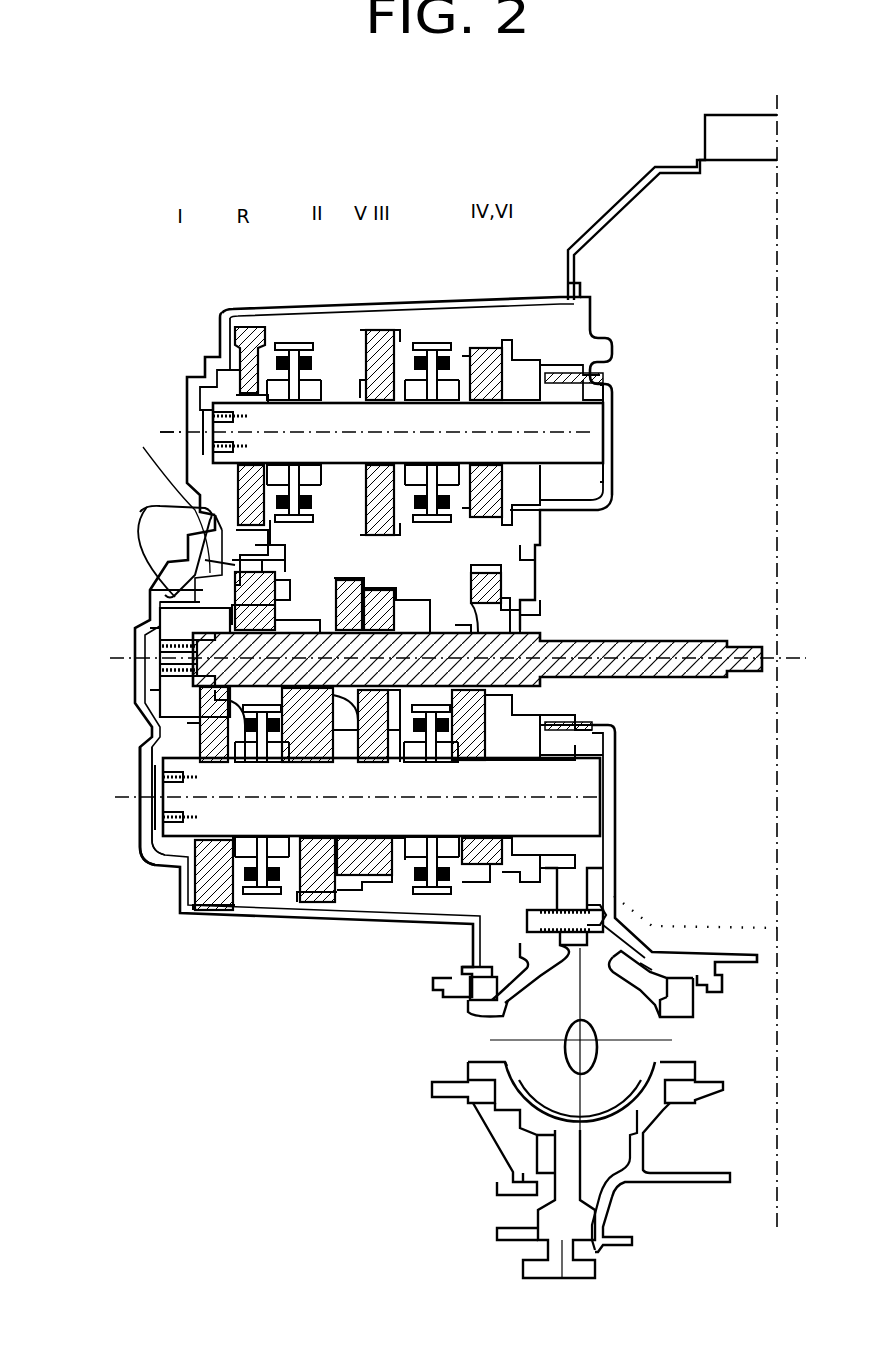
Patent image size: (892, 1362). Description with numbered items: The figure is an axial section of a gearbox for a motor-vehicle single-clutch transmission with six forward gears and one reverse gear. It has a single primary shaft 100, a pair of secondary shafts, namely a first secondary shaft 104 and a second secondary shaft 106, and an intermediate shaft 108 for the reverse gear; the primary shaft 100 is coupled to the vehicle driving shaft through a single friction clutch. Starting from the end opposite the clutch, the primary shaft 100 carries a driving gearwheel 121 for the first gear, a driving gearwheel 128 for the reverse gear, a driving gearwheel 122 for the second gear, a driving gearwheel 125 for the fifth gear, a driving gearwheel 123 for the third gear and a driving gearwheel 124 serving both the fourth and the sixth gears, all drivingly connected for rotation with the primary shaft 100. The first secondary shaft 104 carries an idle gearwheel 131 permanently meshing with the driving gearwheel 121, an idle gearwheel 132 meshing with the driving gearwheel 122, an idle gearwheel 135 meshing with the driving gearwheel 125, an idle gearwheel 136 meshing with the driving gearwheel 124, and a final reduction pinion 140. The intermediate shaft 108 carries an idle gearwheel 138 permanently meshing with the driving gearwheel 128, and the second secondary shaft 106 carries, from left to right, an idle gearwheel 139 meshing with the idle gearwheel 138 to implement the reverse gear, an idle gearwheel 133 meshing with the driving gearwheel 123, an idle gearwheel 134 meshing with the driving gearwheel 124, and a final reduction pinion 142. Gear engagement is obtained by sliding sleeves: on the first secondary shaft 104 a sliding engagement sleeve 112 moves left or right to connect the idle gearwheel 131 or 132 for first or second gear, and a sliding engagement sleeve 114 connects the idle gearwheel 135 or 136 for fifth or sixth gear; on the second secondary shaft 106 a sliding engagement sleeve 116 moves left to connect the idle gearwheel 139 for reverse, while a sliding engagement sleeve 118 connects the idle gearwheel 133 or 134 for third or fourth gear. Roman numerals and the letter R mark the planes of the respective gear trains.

The primary shaft 100 is at (708, 645).
The first secondary shaft 104 is at (588, 792).
The second secondary shaft 106 is at (585, 432).
The intermediate shaft 108 is at (167, 518).
The sliding engagement sleeve 112 is at (262, 897).
The sliding engagement sleeve 114 is at (440, 894).
The sliding engagement sleeve 116 is at (292, 343).
The sliding engagement sleeve 118 is at (432, 343).
The driving gearwheel 121 is at (203, 630).
The driving gearwheel 122 is at (312, 620).
The driving gearwheel 123 is at (380, 588).
The driving gearwheel 124 is at (492, 570).
The driving gearwheel 125 is at (350, 578).
The driving gearwheel 128 is at (190, 747).
The idle gearwheel 131 is at (215, 912).
The idle gearwheel 132 is at (320, 905).
The idle gearwheel 133 is at (382, 328).
The idle gearwheel 134 is at (484, 348).
The idle gearwheel 135 is at (357, 880).
The idle gearwheel 136 is at (496, 864).
The idle gearwheel 138 is at (160, 497).
The idle gearwheel 139 is at (250, 328).
The final reduction pinion 140 is at (578, 745).
The final reduction pinion 142 is at (585, 505).